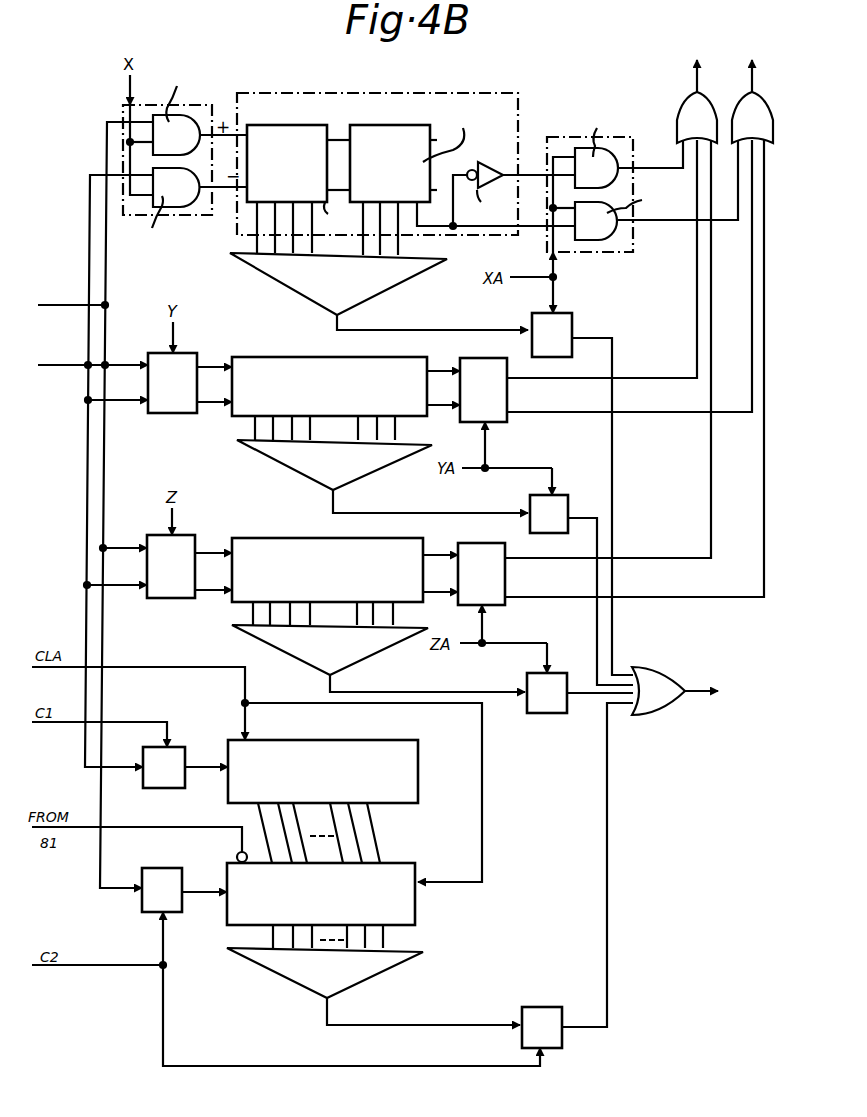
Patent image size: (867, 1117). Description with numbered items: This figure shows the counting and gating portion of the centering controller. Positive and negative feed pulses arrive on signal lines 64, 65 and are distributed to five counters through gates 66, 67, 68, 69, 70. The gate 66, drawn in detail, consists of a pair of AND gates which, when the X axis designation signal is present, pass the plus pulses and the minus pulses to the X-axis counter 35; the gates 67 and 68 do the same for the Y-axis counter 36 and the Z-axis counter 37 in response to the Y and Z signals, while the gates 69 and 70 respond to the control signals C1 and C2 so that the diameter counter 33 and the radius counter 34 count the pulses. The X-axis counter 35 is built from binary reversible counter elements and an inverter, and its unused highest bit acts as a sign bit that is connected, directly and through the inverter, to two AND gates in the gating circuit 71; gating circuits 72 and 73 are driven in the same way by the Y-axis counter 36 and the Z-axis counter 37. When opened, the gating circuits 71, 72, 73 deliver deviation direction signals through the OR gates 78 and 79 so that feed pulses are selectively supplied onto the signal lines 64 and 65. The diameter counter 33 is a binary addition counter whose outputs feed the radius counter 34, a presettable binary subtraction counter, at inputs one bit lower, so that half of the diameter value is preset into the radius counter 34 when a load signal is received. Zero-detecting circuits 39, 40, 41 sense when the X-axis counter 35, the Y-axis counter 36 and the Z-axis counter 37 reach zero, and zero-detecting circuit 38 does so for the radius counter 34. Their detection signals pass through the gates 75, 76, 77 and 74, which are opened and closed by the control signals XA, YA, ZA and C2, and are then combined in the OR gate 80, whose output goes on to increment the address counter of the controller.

The diameter counter 33 is at (367, 752).
The radius counter 34 is at (416, 922).
The X-axis counter 35 is at (297, 93).
The Y-axis counter 36 is at (289, 356).
The Z-axis counter 37 is at (285, 537).
The zero-detecting circuit 38 is at (371, 978).
The zero-detecting circuit 39 is at (395, 282).
The zero-detecting circuit 40 is at (373, 462).
The zero-detecting circuit 41 is at (379, 652).
The signal line 64 is at (62, 305).
The signal line 65 is at (60, 362).
The gate 66 is at (182, 222).
The gate 67 is at (177, 415).
The gate 68 is at (173, 600).
The gate 69 is at (178, 757).
The gate 70 is at (171, 882).
The gating circuit 71 is at (597, 253).
The gating circuit 72 is at (508, 423).
The gating circuit 73 is at (505, 605).
The gate 74 is at (535, 1017).
The gate 75 is at (569, 328).
The gate 76 is at (564, 503).
The gate 77 is at (560, 680).
The OR gate 78 is at (684, 108).
The OR gate 79 is at (747, 99).
The OR gate 80 is at (661, 680).